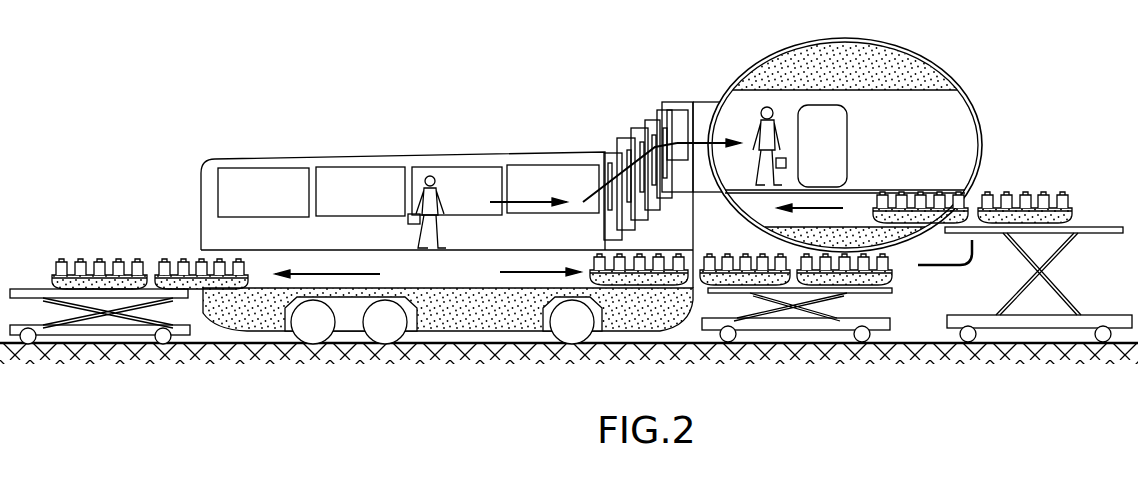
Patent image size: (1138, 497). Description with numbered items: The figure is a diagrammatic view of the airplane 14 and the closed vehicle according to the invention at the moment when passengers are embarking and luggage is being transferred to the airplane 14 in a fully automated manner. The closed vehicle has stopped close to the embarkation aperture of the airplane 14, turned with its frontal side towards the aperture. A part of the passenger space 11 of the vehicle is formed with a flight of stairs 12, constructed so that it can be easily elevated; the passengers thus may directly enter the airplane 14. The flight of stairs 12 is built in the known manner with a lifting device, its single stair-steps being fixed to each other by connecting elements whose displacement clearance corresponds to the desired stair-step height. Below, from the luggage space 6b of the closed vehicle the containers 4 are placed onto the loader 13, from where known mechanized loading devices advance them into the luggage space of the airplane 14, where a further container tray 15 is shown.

The containers 4 is at (88, 272).
The luggage space 6b is at (268, 268).
The passenger space 11 is at (372, 180).
The flight of stairs 12 is at (614, 165).
The loader 13 is at (30, 290).
The airplane 14 is at (953, 115).
The cargo container tray in aircraft 15 is at (965, 196).